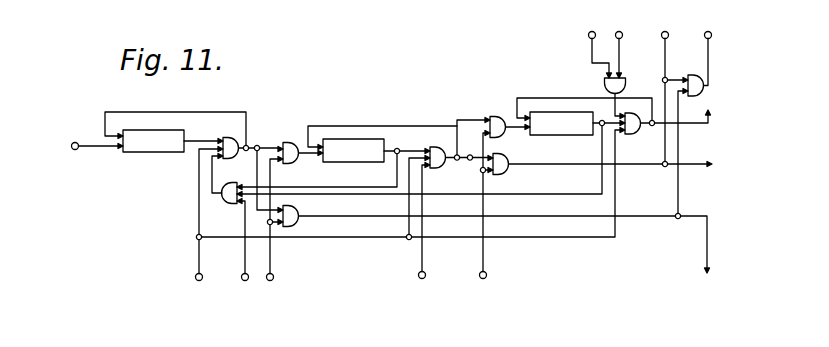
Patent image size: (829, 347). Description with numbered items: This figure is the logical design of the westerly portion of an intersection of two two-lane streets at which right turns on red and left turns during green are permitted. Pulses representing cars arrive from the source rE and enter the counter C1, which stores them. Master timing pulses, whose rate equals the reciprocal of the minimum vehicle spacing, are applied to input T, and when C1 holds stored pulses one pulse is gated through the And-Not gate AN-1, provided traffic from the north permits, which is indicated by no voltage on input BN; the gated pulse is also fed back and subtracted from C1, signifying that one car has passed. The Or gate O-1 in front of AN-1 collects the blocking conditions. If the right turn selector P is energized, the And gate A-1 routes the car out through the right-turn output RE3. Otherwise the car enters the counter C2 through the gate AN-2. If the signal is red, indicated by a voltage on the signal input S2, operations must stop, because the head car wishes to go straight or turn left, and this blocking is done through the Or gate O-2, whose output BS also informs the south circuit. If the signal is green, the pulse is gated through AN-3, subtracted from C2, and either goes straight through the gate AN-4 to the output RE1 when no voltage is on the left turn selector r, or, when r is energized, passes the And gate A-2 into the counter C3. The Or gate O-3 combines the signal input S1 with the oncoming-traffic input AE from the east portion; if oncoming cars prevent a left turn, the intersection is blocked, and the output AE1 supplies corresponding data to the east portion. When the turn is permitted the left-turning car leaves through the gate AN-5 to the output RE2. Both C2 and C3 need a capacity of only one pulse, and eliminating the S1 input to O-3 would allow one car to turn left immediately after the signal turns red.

The counter C1 is at (153, 141).
The counter C2 is at (353, 150).
The counter C3 is at (561, 123).
The And-Not gate AN-1 is at (230, 159).
The And-Not gate AN-2 is at (297, 163).
The And-Not gate AN-3 is at (444, 170).
The And-Not gate AN-4 is at (515, 173).
The And-Not gate AN-5 is at (636, 132).
The And gate A-1 is at (300, 223).
The And gate A-2 is at (504, 136).
The Or gate O-1 is at (222, 202).
The Or gate O-2 is at (708, 90).
The Or gate O-3 is at (628, 89).
The source of car pulses rE is at (84, 136).
The master timing pulse input T is at (208, 225).
The north-circuit input B BN is at (246, 253).
The right turn selector P is at (274, 229).
The traffic signal input S2 is at (423, 232).
The left turn selector r is at (485, 216).
The traffic signal input to O-3 S1 is at (599, 46).
The east-circuit input A AE is at (616, 46).
The south-circuit output B BS is at (673, 88).
The east-circuit output A AE1 is at (713, 50).
The straight-through output RE1 is at (706, 148).
The left-turn output RE2 is at (723, 119).
The right-turn output RE3 is at (718, 291).